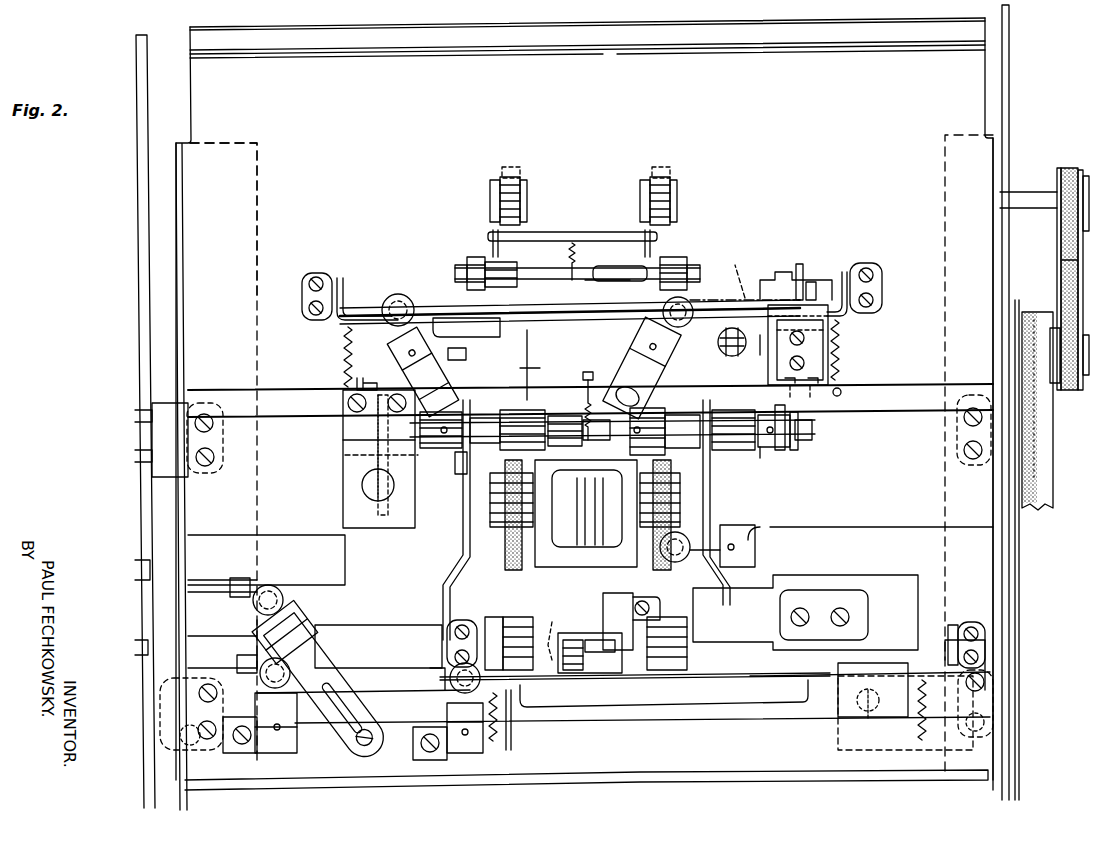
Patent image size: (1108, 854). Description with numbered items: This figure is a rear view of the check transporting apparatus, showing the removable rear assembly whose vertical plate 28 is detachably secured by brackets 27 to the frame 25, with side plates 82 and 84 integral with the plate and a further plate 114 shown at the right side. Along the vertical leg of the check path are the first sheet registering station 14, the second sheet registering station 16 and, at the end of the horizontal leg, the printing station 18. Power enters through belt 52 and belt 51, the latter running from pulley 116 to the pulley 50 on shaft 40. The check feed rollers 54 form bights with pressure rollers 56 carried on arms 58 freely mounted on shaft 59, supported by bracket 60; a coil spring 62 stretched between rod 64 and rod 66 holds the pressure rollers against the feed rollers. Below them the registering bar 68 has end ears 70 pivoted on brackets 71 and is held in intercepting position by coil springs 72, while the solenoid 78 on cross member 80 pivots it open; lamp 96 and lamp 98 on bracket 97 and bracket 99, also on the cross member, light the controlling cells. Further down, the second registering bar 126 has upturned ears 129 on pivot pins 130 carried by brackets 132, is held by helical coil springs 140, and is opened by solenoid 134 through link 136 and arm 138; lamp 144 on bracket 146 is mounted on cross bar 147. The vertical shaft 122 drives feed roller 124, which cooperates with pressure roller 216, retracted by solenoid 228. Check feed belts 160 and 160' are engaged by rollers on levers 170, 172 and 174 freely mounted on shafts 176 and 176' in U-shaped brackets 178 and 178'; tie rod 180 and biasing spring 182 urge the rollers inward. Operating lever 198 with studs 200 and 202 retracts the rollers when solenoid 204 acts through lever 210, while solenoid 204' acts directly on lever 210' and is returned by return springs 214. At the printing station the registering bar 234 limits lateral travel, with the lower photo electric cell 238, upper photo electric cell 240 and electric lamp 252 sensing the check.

The first sheet registering station 14 is at (509, 311).
The second sheet registering station 16 is at (697, 683).
The third sheet registering and printing station 18 is at (392, 690).
The frame 25 is at (134, 294).
The brackets 27 is at (181, 478).
The vertical plate 28 is at (802, 128).
The shaft 40 is at (1030, 190).
The pulley 50 is at (1078, 167).
The belt 51 is at (1079, 270).
The belt 52 is at (1046, 472).
The check feed rollers 54 is at (511, 166).
The pressure rollers 56 is at (490, 192).
The arms 58 is at (475, 258).
The shaft 59 is at (612, 265).
The bracket 60 is at (553, 284).
The coil spring 62 is at (572, 242).
The rod 64 is at (533, 232).
The rod 66 is at (590, 284).
The registering bar 68 is at (452, 322).
The end ears 70 is at (338, 275).
The brackets 71 is at (302, 280).
The coil springs 72 is at (345, 340).
The solenoid 78 is at (745, 273).
The cross member 80 is at (221, 388).
The side plate 82 is at (1010, 90).
The side plate 84 is at (189, 322).
The lamp 96 is at (394, 294).
The bracket 97 is at (352, 378).
The lamp 98 is at (692, 302).
The bracket 99 is at (705, 368).
The plate 114 is at (1016, 553).
The pulley 116 is at (1062, 332).
The vertical shaft 122 is at (582, 548).
The feed roller 124 is at (604, 626).
The registering bar 126 is at (750, 674).
The upturned ears 129 is at (497, 620).
The pivot pins 130 is at (452, 648).
The brackets 132 is at (462, 620).
The solenoid 134 is at (843, 710).
The link 136 is at (886, 719).
The arm 138 is at (861, 721).
The helical coil springs 140 is at (498, 728).
The lamp 144 is at (450, 672).
The bracket 146 is at (465, 757).
The cross bar 147 is at (708, 763).
The check feed belt 160 is at (522, 530).
The check feed belt 160' is at (643, 571).
The lever 170 is at (531, 368).
The lever 172 is at (455, 324).
The lever 174 is at (462, 510).
The shaft 176 is at (458, 447).
The shaft 176' is at (824, 427).
The U-shaped bracket 178 is at (612, 438).
The U-shaped bracket 178' is at (803, 460).
The tie rod 180 is at (591, 398).
The biasing spring 182 is at (610, 442).
The operating lever 198 is at (462, 480).
The stud 200 is at (712, 450).
The stud 202 is at (480, 416).
The solenoid 204 is at (380, 475).
The solenoid 204' is at (835, 352).
The lever 210 is at (357, 456).
The lever 210' is at (822, 433).
The return springs 214 is at (824, 278).
The pressure roller 216 is at (585, 660).
The solenoid 228 is at (880, 585).
The registering bar 234 is at (258, 164).
The lower photo electric cell 238 is at (262, 664).
The upper photo electric cell 240 is at (256, 604).
The electric lamp 252 is at (735, 520).